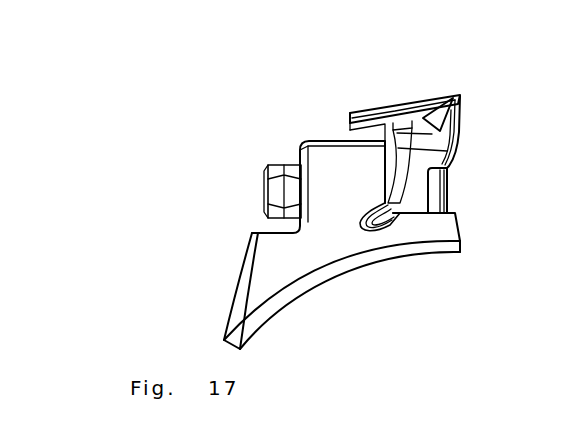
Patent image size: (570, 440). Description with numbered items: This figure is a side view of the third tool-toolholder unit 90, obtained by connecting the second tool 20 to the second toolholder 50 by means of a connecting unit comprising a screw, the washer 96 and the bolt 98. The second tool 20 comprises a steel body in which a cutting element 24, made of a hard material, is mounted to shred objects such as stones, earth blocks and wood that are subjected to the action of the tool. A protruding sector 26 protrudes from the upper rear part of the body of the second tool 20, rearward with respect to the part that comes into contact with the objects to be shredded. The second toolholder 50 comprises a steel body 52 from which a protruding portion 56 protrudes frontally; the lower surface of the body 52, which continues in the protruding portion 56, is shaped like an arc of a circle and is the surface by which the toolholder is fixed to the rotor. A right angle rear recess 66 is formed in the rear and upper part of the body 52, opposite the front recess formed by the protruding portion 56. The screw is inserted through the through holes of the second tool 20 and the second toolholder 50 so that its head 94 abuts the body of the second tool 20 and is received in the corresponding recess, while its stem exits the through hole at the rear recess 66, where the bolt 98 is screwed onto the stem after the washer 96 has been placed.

The second tool 20 is at (418, 97).
The cutting element 24 is at (460, 100).
The protruding sector 26 is at (368, 108).
The second toolholder 50 is at (232, 270).
The body 52 is at (320, 245).
The protruding portion 56 is at (436, 228).
The right angle rear recess 66 is at (263, 218).
The third tool-toolholder unit 90 is at (332, 122).
The head 94 is at (442, 190).
The washer 96 is at (303, 158).
The bolt 98 is at (275, 190).